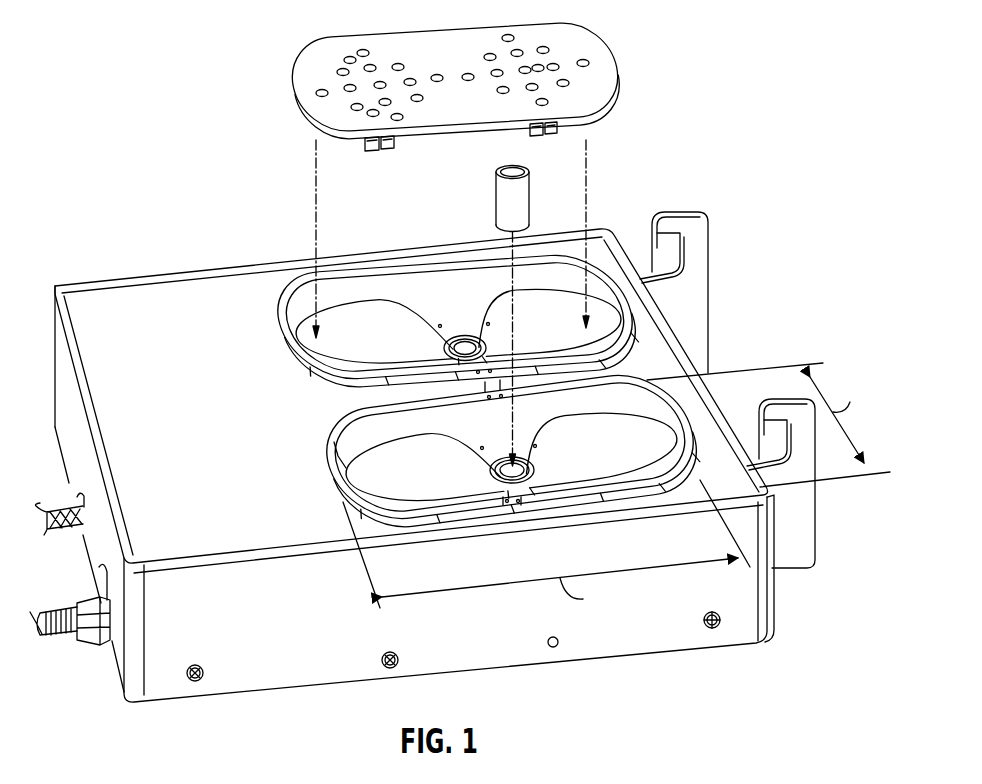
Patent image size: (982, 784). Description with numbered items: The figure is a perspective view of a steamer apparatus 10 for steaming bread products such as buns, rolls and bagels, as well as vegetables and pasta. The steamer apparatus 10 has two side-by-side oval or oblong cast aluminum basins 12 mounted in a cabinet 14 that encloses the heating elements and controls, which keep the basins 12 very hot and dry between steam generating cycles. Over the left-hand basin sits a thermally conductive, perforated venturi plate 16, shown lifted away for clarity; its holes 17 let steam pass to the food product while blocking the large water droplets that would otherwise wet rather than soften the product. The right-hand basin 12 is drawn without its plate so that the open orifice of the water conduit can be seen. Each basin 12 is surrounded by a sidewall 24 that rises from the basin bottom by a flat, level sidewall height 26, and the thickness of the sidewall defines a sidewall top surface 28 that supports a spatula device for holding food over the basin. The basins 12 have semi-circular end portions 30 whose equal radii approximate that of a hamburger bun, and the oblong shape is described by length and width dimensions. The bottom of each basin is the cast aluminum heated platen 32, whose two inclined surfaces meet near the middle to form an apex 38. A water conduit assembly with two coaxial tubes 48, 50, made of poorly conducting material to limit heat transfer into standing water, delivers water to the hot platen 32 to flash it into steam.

The steamer apparatus 10 is at (784, 128).
The basin 12 is at (610, 236).
The cabinet 14 is at (192, 362).
The venturi plate 16 is at (313, 63).
The holes 17 is at (546, 48).
The sidewall 24 is at (394, 287).
The sidewall height 26 is at (560, 401).
The sidewall top surface 28 is at (332, 452).
The semi-circular end portions 30 is at (279, 301).
The basin platen 32 is at (357, 355).
The apex 38 is at (460, 336).
The coaxial tube 48 is at (548, 472).
The coaxial tube 50 is at (533, 192).